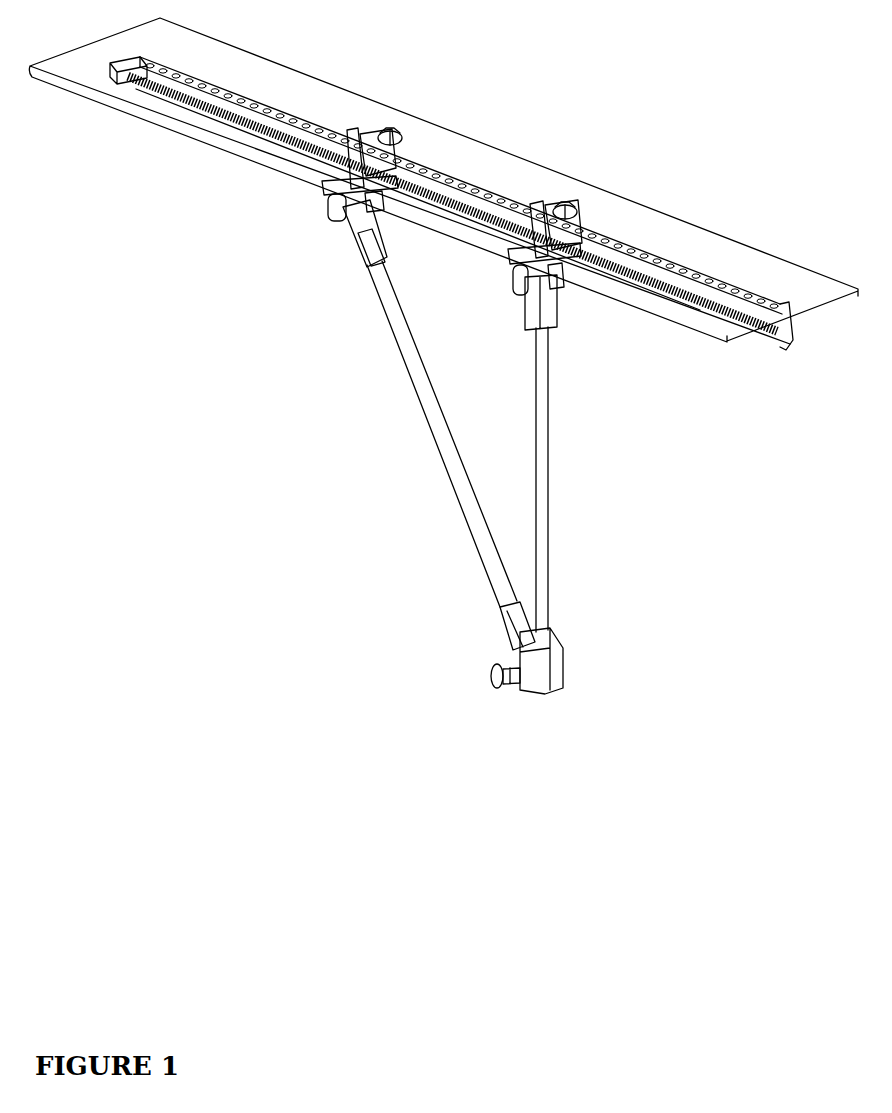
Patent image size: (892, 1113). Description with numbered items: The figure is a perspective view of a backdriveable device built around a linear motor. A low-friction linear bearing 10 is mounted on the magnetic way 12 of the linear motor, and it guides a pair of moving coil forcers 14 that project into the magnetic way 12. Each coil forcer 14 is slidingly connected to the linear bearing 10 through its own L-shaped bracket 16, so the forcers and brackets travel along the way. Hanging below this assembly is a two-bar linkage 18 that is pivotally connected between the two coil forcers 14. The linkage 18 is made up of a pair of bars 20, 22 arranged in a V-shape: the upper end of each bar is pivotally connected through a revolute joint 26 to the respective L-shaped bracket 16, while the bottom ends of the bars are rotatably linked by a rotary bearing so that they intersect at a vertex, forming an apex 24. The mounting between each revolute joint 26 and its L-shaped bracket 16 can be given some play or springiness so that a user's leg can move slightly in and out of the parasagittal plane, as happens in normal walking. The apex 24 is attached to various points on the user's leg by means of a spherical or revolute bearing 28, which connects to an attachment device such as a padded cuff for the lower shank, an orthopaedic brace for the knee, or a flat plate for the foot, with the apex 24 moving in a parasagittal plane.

The low-friction linear bearing 10 is at (768, 337).
The magnetic way 12 is at (747, 286).
The coil forcer 14 is at (342, 133).
The L-shaped bracket 16 is at (395, 148).
The two-bar linkage 18 is at (499, 425).
The bar 20 is at (549, 517).
The bar 22 is at (467, 513).
The apex 24 is at (567, 682).
The revolute joint 26 is at (318, 241).
The spherical or revolute bearing 28 is at (493, 680).